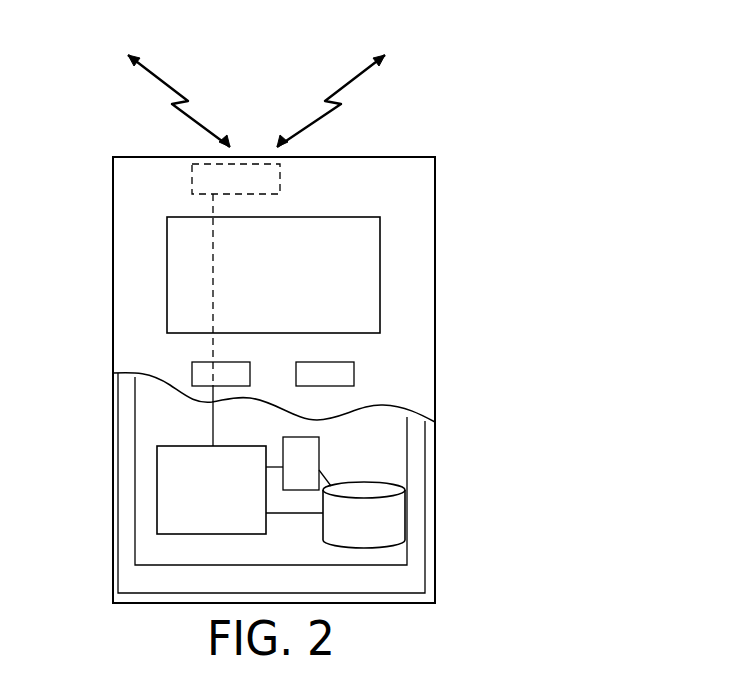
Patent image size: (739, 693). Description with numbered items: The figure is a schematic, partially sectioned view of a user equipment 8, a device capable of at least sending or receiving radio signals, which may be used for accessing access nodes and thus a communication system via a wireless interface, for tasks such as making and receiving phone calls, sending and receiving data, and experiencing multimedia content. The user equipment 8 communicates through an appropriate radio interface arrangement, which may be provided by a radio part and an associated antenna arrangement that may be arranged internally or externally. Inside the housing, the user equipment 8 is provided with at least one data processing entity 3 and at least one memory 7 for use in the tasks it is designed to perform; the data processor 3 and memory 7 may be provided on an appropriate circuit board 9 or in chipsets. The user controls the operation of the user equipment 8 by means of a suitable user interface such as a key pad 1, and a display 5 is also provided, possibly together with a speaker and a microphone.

The key pad 1 is at (238, 370).
The data processing entity 3 is at (170, 463).
The display 5 is at (370, 228).
The memory 7 is at (395, 533).
The user equipment 8 is at (113, 176).
The circuit board 9 is at (313, 447).